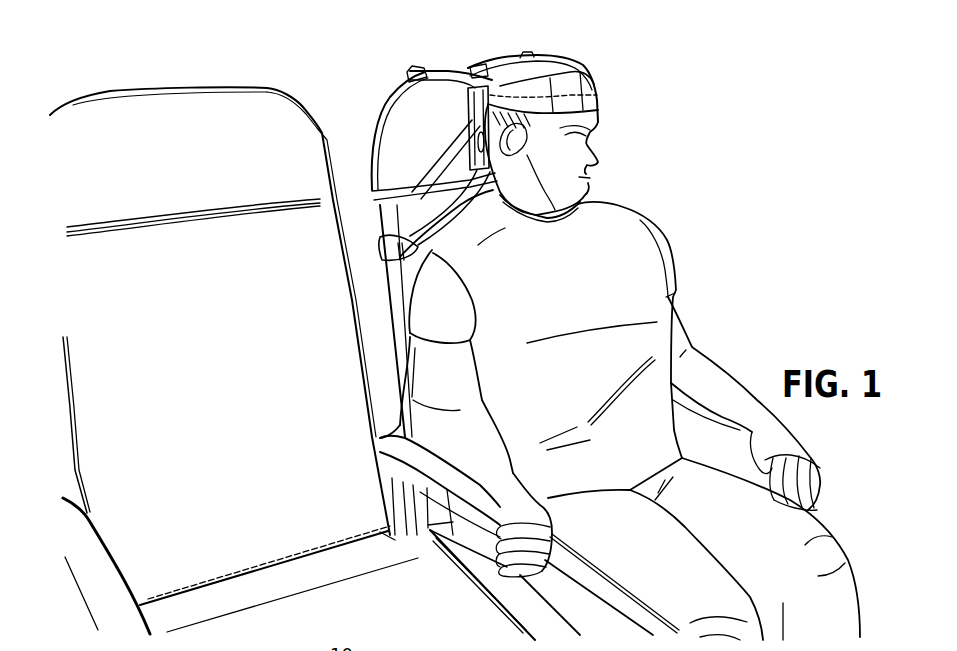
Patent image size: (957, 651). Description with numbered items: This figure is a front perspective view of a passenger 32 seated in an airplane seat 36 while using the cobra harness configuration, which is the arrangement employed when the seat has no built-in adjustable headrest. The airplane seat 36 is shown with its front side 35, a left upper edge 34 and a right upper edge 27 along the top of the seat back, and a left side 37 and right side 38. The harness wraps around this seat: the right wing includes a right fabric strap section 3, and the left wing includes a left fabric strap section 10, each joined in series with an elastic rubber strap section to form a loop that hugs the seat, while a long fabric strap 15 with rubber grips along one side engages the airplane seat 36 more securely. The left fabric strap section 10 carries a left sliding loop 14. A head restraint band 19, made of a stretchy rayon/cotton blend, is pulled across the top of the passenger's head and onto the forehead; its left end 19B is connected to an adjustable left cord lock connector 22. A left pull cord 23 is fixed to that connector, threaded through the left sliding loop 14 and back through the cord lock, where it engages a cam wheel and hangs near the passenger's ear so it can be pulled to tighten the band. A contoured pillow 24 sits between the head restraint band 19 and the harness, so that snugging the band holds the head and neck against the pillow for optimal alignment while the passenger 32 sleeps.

The right fabric strap section 3 is at (605, 166).
The left fabric strap section 10 is at (420, 195).
The left sliding loop 14 is at (447, 72).
The long fabric strap 15 is at (383, 213).
The head restraint band 19 is at (578, 82).
The left end of head restraint band 19B is at (508, 85).
The adjustable left cord lock connector 22 is at (473, 66).
The left pull cord 23 is at (470, 105).
The contoured pillow 24 is at (478, 141).
The right upper edge 27 is at (285, 92).
The passenger 32 is at (668, 252).
The left upper edge 34 is at (63, 105).
The front side 35 is at (240, 318).
The airplane seat 36 is at (182, 120).
The left side 37 is at (78, 447).
The right side 38 is at (352, 318).